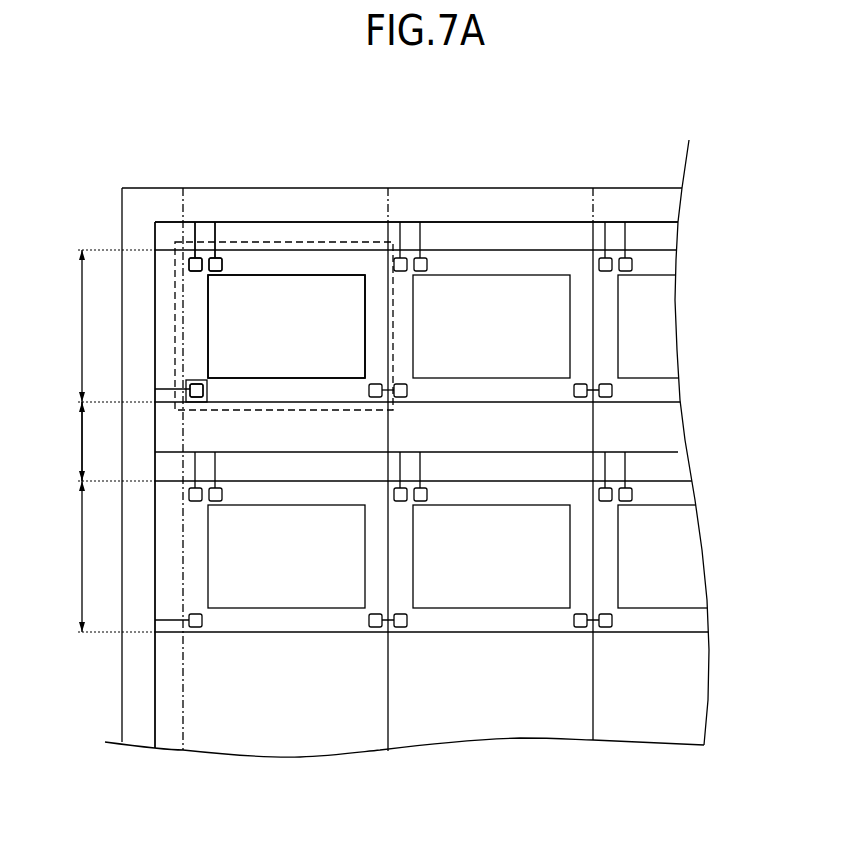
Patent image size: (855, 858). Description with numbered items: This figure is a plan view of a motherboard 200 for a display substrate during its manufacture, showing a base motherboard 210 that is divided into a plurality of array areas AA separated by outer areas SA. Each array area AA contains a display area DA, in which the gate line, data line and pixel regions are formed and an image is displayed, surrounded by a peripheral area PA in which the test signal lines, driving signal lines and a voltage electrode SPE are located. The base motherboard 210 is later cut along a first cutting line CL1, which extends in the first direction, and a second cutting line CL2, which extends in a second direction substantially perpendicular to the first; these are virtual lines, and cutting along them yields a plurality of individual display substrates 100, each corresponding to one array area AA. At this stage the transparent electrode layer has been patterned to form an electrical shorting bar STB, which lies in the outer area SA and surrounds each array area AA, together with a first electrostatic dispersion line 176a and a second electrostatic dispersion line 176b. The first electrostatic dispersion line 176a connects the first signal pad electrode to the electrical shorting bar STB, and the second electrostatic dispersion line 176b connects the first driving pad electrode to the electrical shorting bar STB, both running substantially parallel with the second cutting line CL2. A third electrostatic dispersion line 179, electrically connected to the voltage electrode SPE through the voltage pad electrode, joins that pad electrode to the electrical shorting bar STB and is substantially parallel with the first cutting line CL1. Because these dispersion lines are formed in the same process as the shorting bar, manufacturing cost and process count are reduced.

The motherboard for a display substrate 200 is at (443, 92).
The base motherboard 210 is at (148, 200).
The second electrostatic dispersion line 176b is at (197, 230).
The first electrostatic dispersion line 176a is at (217, 230).
The display substrate 100 is at (292, 230).
The third electrostatic dispersion line 179 is at (166, 388).
The peripheral area PA is at (336, 261).
The display area DA is at (286, 326).
The voltage electrode SPE is at (199, 398).
The electrical shorting bar STB is at (462, 222).
The first cutting line CL1 is at (184, 766).
The second cutting line CL2 is at (704, 478).
The array area AA is at (103, 441).
The outer area SA is at (67, 441).